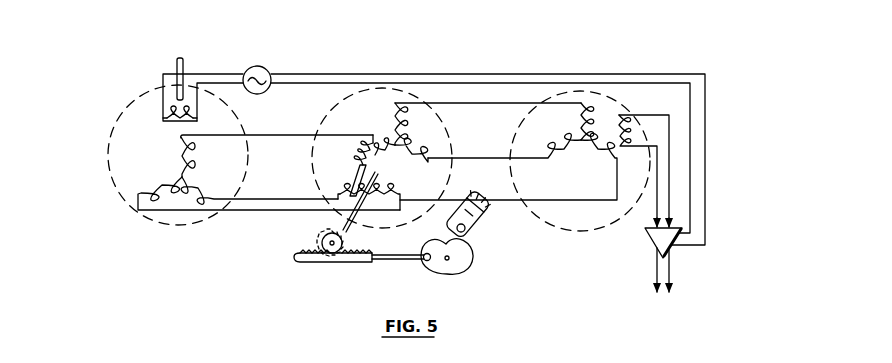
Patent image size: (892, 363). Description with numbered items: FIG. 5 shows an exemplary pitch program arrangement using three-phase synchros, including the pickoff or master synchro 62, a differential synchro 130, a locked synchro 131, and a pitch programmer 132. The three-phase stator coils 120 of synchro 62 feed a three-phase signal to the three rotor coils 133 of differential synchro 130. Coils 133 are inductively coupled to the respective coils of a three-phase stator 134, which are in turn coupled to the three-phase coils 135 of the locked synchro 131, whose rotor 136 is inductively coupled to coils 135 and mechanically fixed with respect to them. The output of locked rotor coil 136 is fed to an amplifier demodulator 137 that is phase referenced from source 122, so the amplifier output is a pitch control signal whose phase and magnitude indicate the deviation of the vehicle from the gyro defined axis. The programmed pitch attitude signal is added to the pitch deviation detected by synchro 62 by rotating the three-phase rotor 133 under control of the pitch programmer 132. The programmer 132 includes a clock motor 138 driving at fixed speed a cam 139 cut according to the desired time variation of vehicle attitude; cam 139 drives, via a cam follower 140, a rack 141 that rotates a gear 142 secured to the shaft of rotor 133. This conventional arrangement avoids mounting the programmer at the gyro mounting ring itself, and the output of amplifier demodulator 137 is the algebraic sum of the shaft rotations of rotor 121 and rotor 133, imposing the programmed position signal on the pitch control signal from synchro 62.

The master synchro 62 is at (128, 184).
The three-phase stator coils 120 is at (210, 182).
The rotor 121 is at (163, 119).
The source 122 is at (267, 72).
The differential synchro 130 is at (342, 117).
The locked synchro 131 is at (537, 132).
The pitch programmer 132 is at (379, 234).
The three-phase rotor coils 133 is at (362, 142).
The three-phase stator 134 is at (409, 113).
The three-phase coils 135 is at (556, 165).
The rotor 136 is at (627, 121).
The amplifier demodulator 137 is at (650, 246).
The clock motor 138 is at (478, 211).
The cam 139 is at (462, 258).
The cam follower 140 is at (392, 262).
The rack 141 is at (323, 264).
The gear 142 is at (322, 233).